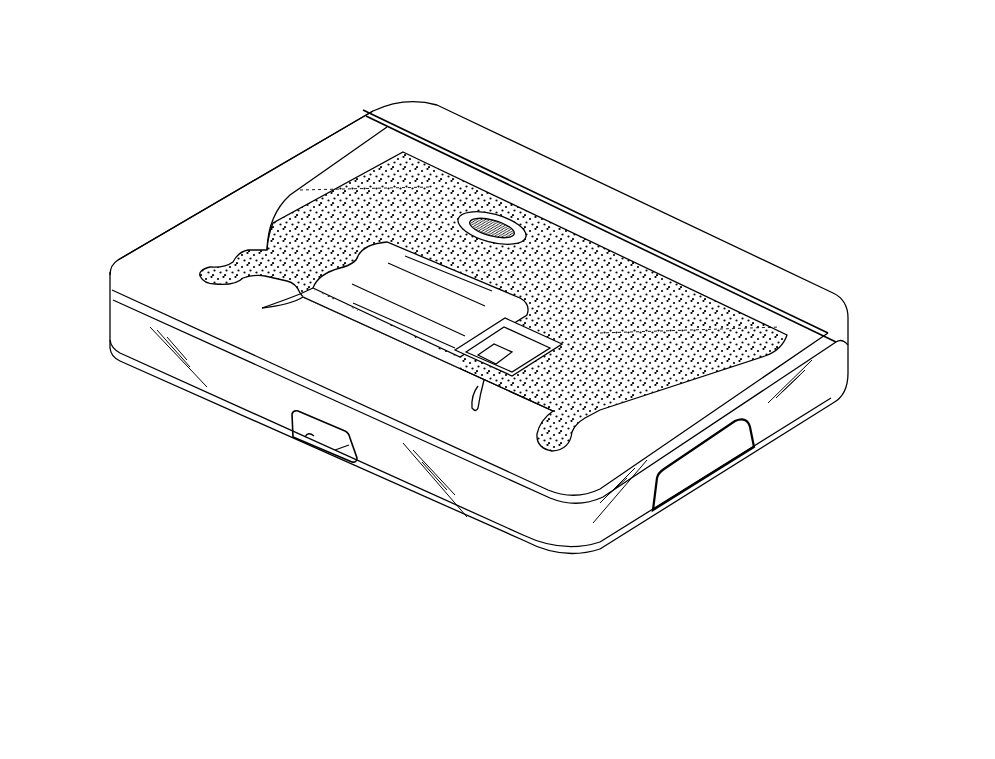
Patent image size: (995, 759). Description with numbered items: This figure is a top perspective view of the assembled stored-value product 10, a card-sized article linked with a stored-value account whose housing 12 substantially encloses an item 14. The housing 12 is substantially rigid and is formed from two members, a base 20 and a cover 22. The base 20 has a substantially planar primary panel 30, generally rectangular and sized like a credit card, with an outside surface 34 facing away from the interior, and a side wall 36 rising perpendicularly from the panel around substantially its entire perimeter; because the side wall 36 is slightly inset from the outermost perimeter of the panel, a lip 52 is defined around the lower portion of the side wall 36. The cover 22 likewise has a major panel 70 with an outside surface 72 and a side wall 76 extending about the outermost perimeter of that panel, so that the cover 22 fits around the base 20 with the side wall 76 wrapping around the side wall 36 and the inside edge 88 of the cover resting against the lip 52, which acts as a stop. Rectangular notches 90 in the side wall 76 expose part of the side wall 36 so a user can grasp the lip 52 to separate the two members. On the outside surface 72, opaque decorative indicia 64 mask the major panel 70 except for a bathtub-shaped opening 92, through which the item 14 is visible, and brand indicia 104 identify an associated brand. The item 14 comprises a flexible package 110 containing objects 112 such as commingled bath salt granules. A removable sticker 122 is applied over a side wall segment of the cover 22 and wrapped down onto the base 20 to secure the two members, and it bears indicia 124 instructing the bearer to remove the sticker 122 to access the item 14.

The stored-value product 10 is at (216, 88).
The housing 12 is at (96, 318).
The item 14 is at (625, 240).
The base 20 is at (398, 500).
The cover 22 is at (478, 505).
The primary panel 30 is at (631, 527).
The outside surface 34 is at (822, 409).
The side wall 36 is at (323, 448).
The lip 52 is at (313, 450).
The decorative indicia 64 is at (200, 254).
The major panel 70 is at (271, 186).
The outside surface 72 is at (327, 147).
The side wall 76 is at (838, 363).
The inside edge 88 is at (193, 396).
The notch 90 is at (340, 447).
The opening 92 is at (374, 167).
The brand indicia 104 is at (503, 210).
The package 110 is at (666, 268).
The objects 112 is at (695, 297).
The sticker 122 is at (750, 458).
The indicia 124 is at (700, 477).